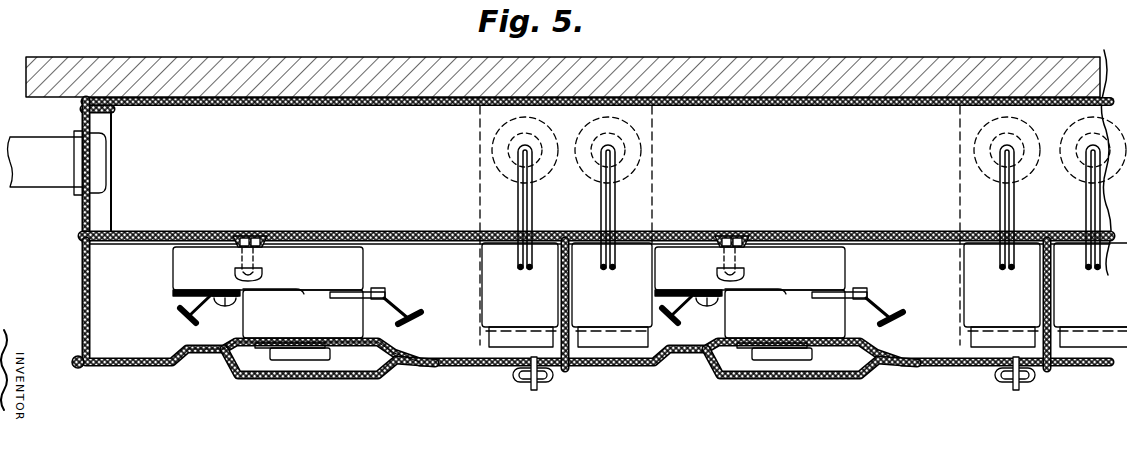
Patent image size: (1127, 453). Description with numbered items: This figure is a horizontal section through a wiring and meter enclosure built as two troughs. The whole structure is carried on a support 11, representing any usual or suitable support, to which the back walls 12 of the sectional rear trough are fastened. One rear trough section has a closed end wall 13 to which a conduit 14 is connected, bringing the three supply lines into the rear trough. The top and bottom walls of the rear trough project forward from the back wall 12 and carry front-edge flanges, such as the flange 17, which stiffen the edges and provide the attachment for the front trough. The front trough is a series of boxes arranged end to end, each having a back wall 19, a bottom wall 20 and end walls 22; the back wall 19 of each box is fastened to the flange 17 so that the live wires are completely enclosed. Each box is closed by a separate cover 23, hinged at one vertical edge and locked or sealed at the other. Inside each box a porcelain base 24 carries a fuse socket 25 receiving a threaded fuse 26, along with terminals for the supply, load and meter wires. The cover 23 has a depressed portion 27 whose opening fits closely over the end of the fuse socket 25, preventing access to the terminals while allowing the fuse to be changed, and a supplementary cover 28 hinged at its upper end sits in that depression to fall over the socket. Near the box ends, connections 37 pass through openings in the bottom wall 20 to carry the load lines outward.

The support 11 is at (262, 67).
The back wall 12 is at (293, 108).
The closed end wall 13 is at (83, 213).
The conduit 14 is at (57, 163).
The flange 17 is at (275, 228).
The back wall 19 is at (322, 230).
The bottom wall 20 is at (462, 340).
The end wall 22 is at (561, 292).
The cover 23 is at (126, 365).
The base 24 is at (190, 262).
The fuse socket 25 is at (544, 313).
The threaded fuse 26 is at (300, 362).
The depressed portion 27 is at (194, 345).
The supplementary cover 28 is at (236, 376).
The connections 37 is at (519, 264).